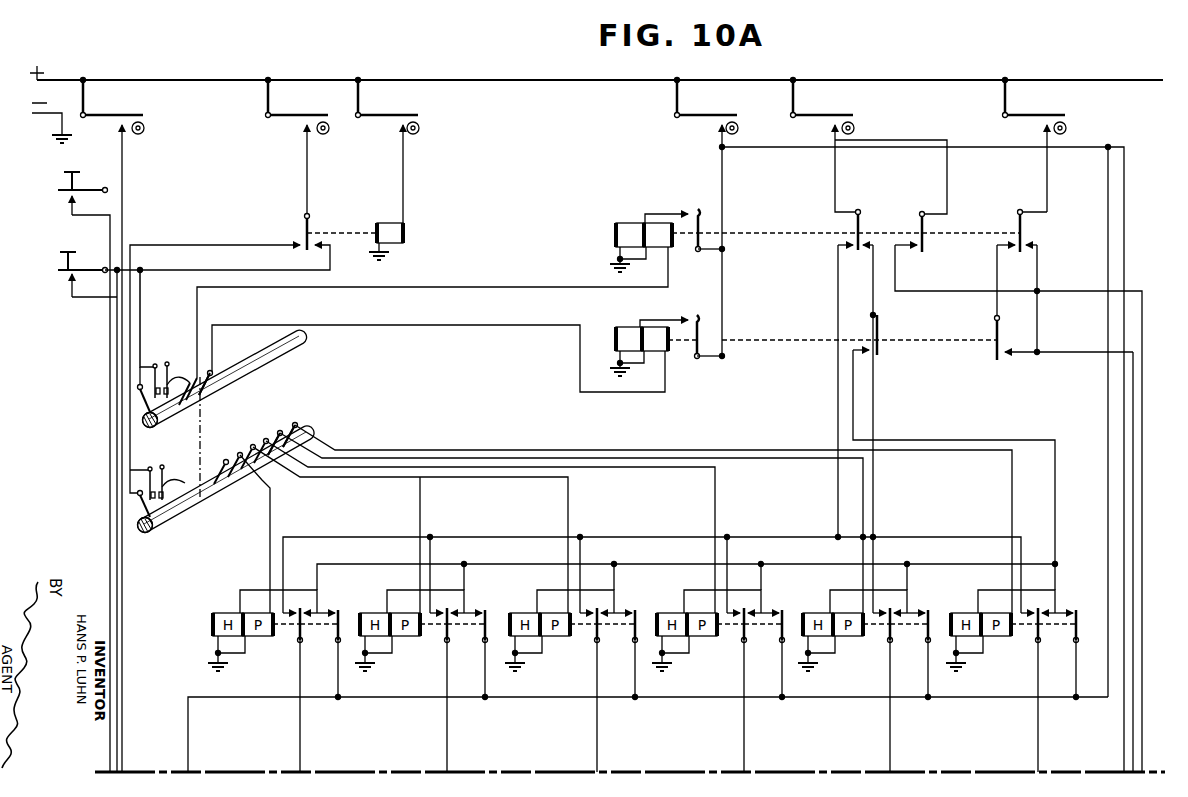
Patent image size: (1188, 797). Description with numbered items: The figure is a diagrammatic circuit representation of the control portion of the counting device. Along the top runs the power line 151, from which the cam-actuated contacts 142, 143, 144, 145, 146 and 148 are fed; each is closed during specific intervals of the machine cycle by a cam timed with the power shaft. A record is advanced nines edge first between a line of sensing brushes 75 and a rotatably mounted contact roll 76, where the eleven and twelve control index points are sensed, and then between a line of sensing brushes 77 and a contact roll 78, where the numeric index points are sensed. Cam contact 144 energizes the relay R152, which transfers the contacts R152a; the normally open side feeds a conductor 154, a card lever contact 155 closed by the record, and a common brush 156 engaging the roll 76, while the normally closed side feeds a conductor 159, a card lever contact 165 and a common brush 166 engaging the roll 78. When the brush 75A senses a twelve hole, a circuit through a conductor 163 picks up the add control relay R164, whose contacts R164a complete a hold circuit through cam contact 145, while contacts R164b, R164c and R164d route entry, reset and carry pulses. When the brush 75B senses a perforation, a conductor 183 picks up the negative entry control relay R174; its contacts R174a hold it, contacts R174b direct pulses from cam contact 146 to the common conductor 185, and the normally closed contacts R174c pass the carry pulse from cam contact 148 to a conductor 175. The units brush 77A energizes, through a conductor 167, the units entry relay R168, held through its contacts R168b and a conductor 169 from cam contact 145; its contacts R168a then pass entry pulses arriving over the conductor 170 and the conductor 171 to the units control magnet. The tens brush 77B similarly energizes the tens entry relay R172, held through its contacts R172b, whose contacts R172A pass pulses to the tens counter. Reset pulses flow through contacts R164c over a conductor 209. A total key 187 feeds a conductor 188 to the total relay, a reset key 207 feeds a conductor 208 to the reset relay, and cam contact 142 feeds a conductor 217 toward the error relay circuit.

The cam contact 142 is at (95, 115).
The cam contact 143 is at (280, 115).
The cam contact 144 is at (370, 115).
The cam contact 145 is at (689, 115).
The cam contact 146 is at (805, 115).
The cam contact 148 is at (1017, 115).
The power line 151 is at (492, 80).
The total key 187 is at (80, 185).
The conductor 217 is at (123, 167).
The reset key 207 is at (67, 292).
The conductor 208 is at (119, 618).
The conductor 188 is at (107, 520).
The conductor 159 is at (190, 244).
The conductor 154 is at (215, 270).
The transfer contacts R152a is at (309, 232).
The relay R152 is at (403, 247).
The conductor 163 is at (473, 287).
The conductor 183 is at (455, 326).
The add control relay R164 is at (616, 228).
The normally open contacts R164a is at (698, 216).
The transfer contacts R164b is at (856, 215).
The normally open contacts R164c is at (922, 254).
The transfer contacts R164d is at (1026, 242).
The conductor 169 is at (1108, 274).
The conductor 170 is at (835, 415).
The negative entry control relay R174 is at (652, 352).
The normally open contacts R174a is at (700, 315).
The normally open contacts R174b is at (881, 338).
The normally closed contacts R174c is at (995, 318).
The conductor 175 is at (1133, 420).
The conductor 209 is at (1142, 346).
The sensing brushes 75 is at (212, 364).
The brush 75A is at (190, 381).
The brush 75B is at (220, 378).
The contact roll 76 is at (153, 424).
The card lever contact 155 is at (154, 364).
The common brush 156 is at (138, 390).
The sensing brushes 77 is at (318, 431).
The units brush 77A is at (296, 424).
The tens brush 77B is at (283, 431).
The contact roll 78 is at (150, 529).
The card lever contact 165 is at (163, 488).
The common brush 166 is at (138, 497).
The conductor 167 is at (406, 451).
The conductor 171 is at (893, 538).
The common conductor 185 is at (630, 565).
The tens entry relay R172 is at (850, 637).
The transfer contacts R172A is at (892, 646).
The normally open contacts R172b is at (929, 611).
The units entry relay R168 is at (998, 637).
The transfer contacts R168a is at (1040, 646).
The normally open contacts R168b is at (1082, 635).